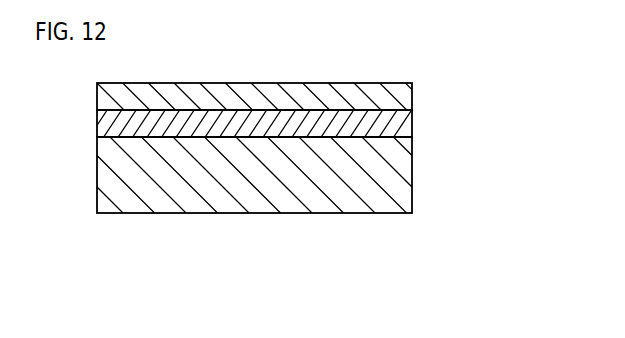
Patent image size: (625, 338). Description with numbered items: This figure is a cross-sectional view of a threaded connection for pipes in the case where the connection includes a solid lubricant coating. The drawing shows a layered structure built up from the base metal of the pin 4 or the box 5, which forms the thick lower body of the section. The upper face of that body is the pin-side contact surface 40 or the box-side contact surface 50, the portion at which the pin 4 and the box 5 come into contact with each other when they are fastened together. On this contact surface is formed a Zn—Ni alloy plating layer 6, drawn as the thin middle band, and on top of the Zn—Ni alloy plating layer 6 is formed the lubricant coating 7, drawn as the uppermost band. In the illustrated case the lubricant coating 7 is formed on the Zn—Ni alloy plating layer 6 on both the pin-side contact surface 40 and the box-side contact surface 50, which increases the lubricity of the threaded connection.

The lubricant coating 7 is at (412, 98).
The Zn—Ni alloy plating layer 6 is at (412, 124).
The pin 4 is at (247, 175).
The box 5 is at (412, 172).
The pin-side contact surface 40 is at (254, 201).
The box-side contact surface 50 is at (302, 138).